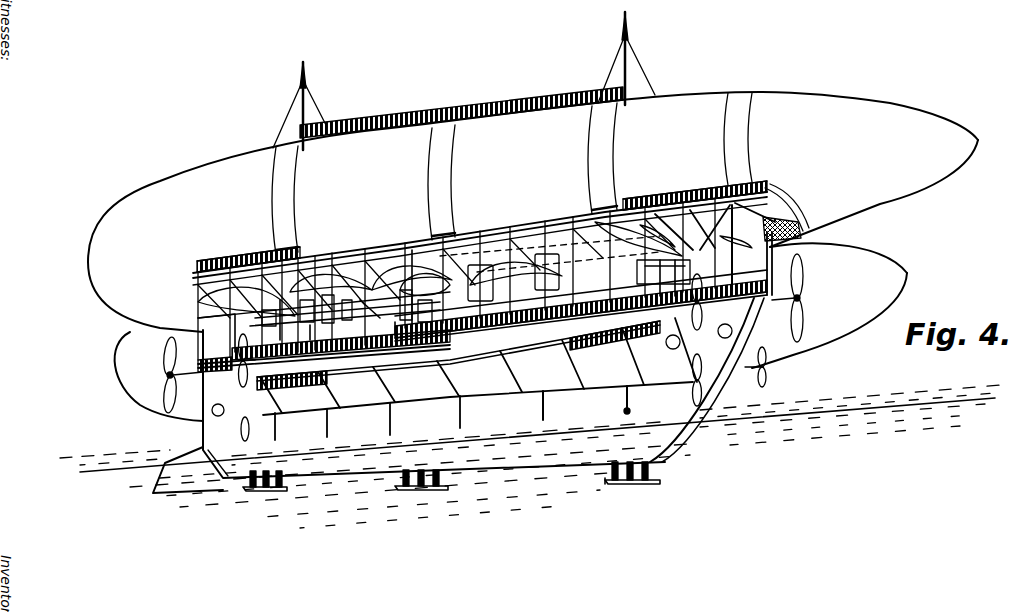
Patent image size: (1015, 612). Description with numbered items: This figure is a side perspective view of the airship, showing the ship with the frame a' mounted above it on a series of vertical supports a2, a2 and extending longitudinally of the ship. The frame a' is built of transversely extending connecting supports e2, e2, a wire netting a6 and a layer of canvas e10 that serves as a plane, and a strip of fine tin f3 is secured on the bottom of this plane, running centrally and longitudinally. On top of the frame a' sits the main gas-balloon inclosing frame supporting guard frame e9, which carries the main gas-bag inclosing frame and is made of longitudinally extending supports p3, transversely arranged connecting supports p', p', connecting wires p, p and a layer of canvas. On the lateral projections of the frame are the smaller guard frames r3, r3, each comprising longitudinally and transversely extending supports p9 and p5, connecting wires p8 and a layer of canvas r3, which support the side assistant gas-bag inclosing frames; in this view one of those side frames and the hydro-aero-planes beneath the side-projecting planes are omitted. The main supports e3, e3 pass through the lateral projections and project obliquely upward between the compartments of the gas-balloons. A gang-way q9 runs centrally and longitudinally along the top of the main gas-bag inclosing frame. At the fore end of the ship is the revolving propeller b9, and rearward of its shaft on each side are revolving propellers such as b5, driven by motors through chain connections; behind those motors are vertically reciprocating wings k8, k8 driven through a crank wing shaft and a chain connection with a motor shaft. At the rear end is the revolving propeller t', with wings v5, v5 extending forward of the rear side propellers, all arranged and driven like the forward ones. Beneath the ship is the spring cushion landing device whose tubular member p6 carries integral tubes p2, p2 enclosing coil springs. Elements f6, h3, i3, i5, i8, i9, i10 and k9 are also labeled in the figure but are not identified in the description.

The frame a' is at (533, 212).
The vertical supports a2 is at (196, 313).
The wire netting a6 is at (778, 238).
The revolving propeller b5 is at (700, 312).
The revolving propeller b9 is at (798, 343).
The transversely extending connecting supports e2 is at (600, 266).
The main supports e3 is at (325, 285).
The main gas-balloon inclosing frame supporting guard frame e9 is at (769, 187).
The layer of canvas e10 is at (718, 245).
The strip of fine tin f3 is at (480, 268).
The float f6 is at (604, 479).
The suspension band h3 is at (299, 193).
The auxiliary propeller i3 is at (238, 378).
The post i5 is at (730, 220).
The mast i8 is at (312, 124).
The side panel i9 is at (466, 381).
The side panel i10 is at (628, 367).
The vertically reciprocating wings k8 is at (666, 242).
The side propeller k9 is at (692, 392).
The connecting wires p is at (480, 238).
The transversely arranged connecting supports p' is at (248, 250).
The integral tubes p2 is at (422, 490).
The longitudinally extending supports p3 is at (709, 190).
The transversely extending supports p5 is at (622, 352).
The tubular member p6 is at (450, 478).
The connecting wires p8 is at (300, 386).
The longitudinally extending supports p9 is at (583, 350).
The gang-way q9 is at (466, 107).
The smaller gas-balloon inclosing frame supporting guard frame r3 is at (357, 370).
The revolving propeller t' is at (168, 374).
The wings v5 is at (345, 295).